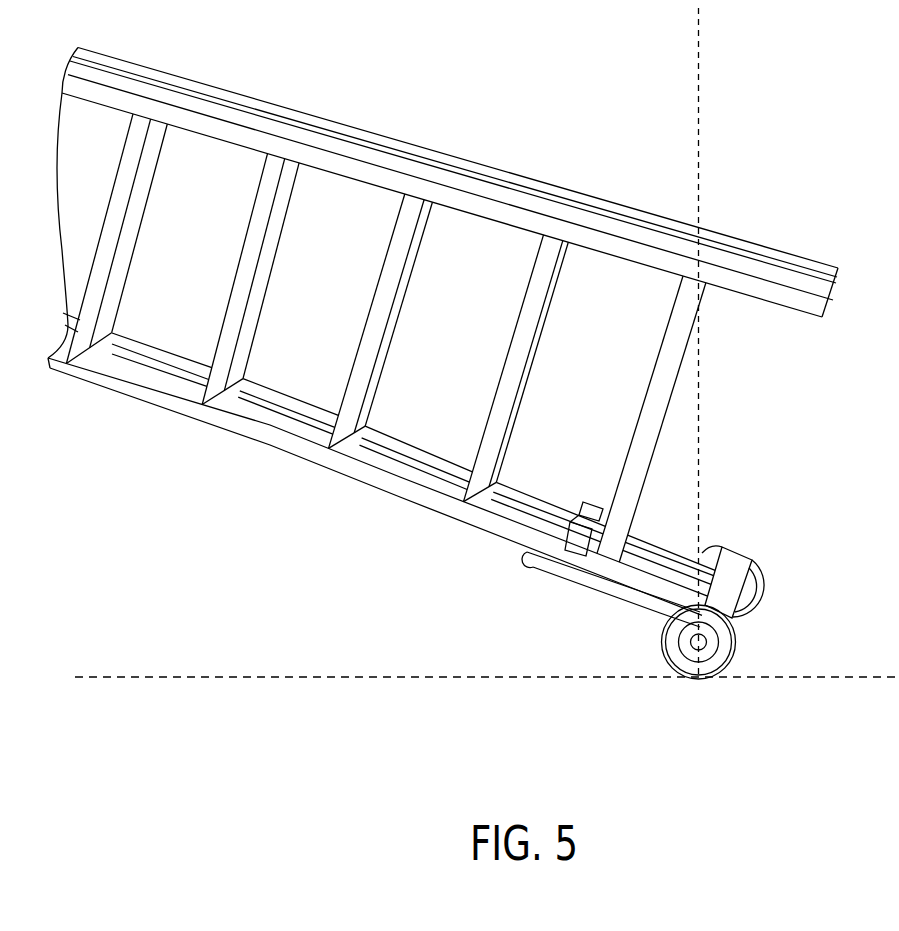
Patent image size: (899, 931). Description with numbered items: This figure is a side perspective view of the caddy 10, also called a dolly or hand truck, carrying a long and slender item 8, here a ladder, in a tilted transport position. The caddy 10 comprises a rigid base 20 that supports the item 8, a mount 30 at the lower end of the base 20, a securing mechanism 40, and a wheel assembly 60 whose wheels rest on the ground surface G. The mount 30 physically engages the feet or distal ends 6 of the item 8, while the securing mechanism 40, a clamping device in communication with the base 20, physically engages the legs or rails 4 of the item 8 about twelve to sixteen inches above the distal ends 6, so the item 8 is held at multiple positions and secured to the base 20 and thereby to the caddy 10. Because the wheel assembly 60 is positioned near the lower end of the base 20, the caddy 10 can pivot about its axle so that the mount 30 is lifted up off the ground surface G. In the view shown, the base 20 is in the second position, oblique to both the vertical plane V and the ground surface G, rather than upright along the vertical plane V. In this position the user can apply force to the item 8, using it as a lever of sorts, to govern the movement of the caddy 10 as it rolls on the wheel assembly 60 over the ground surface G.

The item 8 is at (486, 108).
The rails 4 is at (605, 212).
The distal ends 6 is at (835, 283).
The vertical plane V is at (700, 98).
The ground surface G is at (838, 677).
The securing mechanism 40 is at (592, 481).
The caddy 10 is at (651, 628).
The base 20 is at (542, 595).
The mount 30 is at (759, 544).
The wheel assembly 60 is at (690, 705).